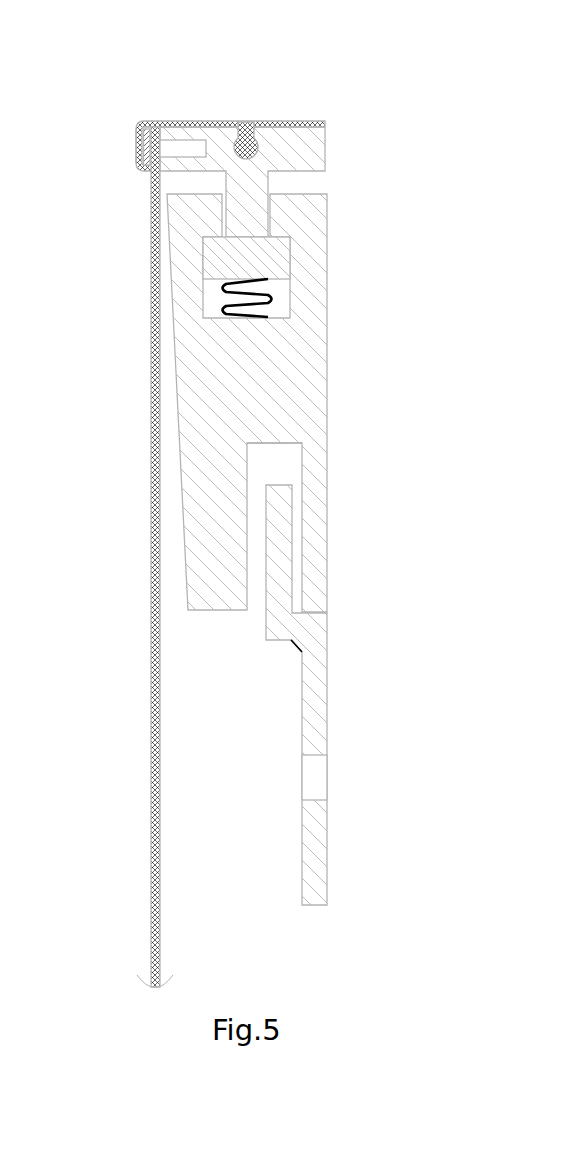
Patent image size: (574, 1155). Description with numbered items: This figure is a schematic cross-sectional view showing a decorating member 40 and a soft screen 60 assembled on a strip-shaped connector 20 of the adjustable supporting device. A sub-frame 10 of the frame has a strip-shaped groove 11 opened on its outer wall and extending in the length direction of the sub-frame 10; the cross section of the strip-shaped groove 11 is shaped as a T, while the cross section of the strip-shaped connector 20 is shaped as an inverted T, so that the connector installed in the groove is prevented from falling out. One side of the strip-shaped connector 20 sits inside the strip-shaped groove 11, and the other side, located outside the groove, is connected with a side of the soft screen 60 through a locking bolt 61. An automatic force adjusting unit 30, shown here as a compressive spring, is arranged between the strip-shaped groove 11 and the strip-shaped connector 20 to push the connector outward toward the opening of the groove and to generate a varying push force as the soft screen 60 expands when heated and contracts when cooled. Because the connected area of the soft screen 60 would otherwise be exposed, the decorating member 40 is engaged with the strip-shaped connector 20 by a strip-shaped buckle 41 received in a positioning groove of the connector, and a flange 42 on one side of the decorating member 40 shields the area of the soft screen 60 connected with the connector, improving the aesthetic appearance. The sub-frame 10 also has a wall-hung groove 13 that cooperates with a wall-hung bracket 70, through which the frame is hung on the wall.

The sub-frame 10 is at (310, 386).
The strip-shaped groove 11 is at (227, 297).
The wall-hung groove 13 is at (272, 469).
The strip-shaped connector 20 is at (327, 179).
The automatic force adjusting unit 30 is at (290, 295).
The decorating member 40 is at (194, 122).
The strip-shaped buckle 41 is at (250, 127).
The flange 42 is at (137, 128).
The soft screen 60 is at (151, 428).
The locking bolt 61 is at (160, 147).
The wall-hung bracket 70 is at (313, 695).